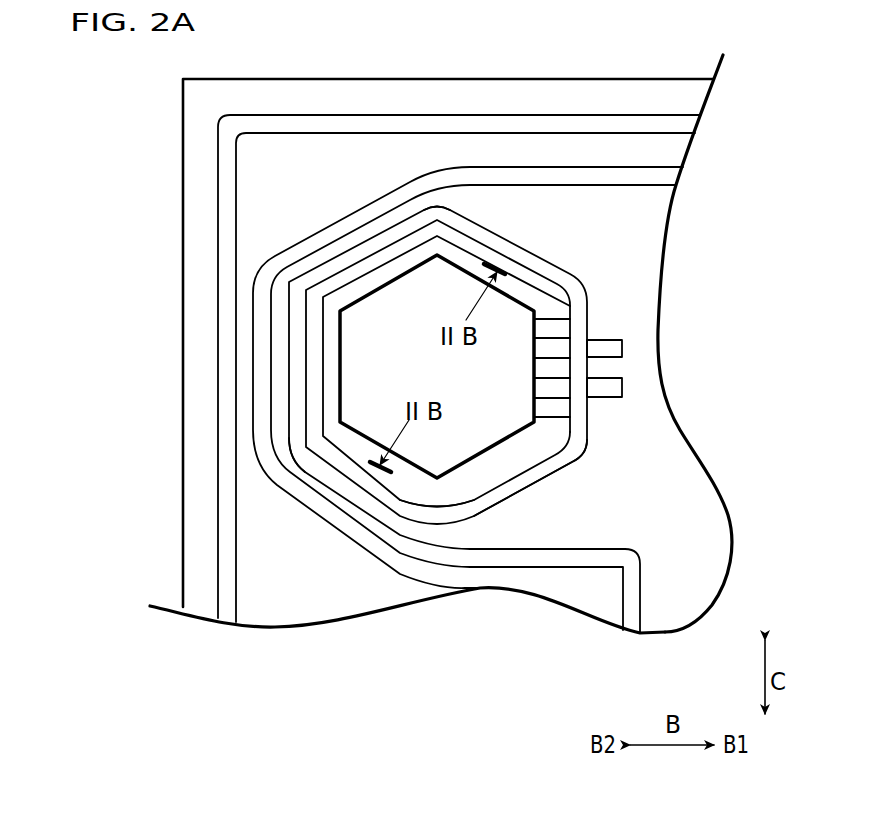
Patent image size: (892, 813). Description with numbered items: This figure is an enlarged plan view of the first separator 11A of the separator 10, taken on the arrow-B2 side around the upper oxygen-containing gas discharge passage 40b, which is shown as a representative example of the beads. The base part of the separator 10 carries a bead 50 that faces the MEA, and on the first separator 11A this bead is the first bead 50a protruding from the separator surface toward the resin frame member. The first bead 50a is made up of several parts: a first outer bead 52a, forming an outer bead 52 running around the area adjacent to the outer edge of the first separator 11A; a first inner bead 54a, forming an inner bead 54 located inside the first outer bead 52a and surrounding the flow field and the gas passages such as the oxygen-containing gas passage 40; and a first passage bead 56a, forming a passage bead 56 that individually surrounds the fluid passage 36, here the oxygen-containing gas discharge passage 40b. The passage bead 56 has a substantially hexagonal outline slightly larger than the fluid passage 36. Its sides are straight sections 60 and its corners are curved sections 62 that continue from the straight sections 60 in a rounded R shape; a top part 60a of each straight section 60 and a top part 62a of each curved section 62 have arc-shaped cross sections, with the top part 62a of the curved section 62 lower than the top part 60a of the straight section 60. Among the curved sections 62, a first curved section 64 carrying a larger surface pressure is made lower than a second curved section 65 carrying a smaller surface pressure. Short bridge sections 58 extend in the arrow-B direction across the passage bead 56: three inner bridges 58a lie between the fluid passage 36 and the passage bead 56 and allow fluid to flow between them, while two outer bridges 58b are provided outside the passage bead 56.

The first separator 11A is at (327, 77).
The separator 10 is at (448, 312).
The first bead 50a is at (208, 222).
The bead 50 is at (400, 366).
The first outer bead 52a is at (622, 125).
The outer bead 52 is at (465, 315).
The first inner bead 54a is at (655, 175).
The inner bead 54 is at (452, 344).
The first passage bead 56a is at (537, 473).
The passage bead 56 is at (565, 490).
The inner bridge 58a is at (550, 325).
The outer bridge 58b is at (623, 388).
The bridge section 58 is at (653, 338).
The straight section 60 is at (357, 240).
The top part of straight section 60a is at (297, 362).
The curved section 62 is at (379, 394).
The top part of curved section 62a is at (442, 213).
The first curved section 64 is at (281, 223).
The second curved section 65 is at (422, 202).
The upper oxygen-containing gas discharge passage 40b is at (467, 440).
The oxygen-containing gas passage 40 is at (437, 464).
The fluid passage 36 is at (438, 499).